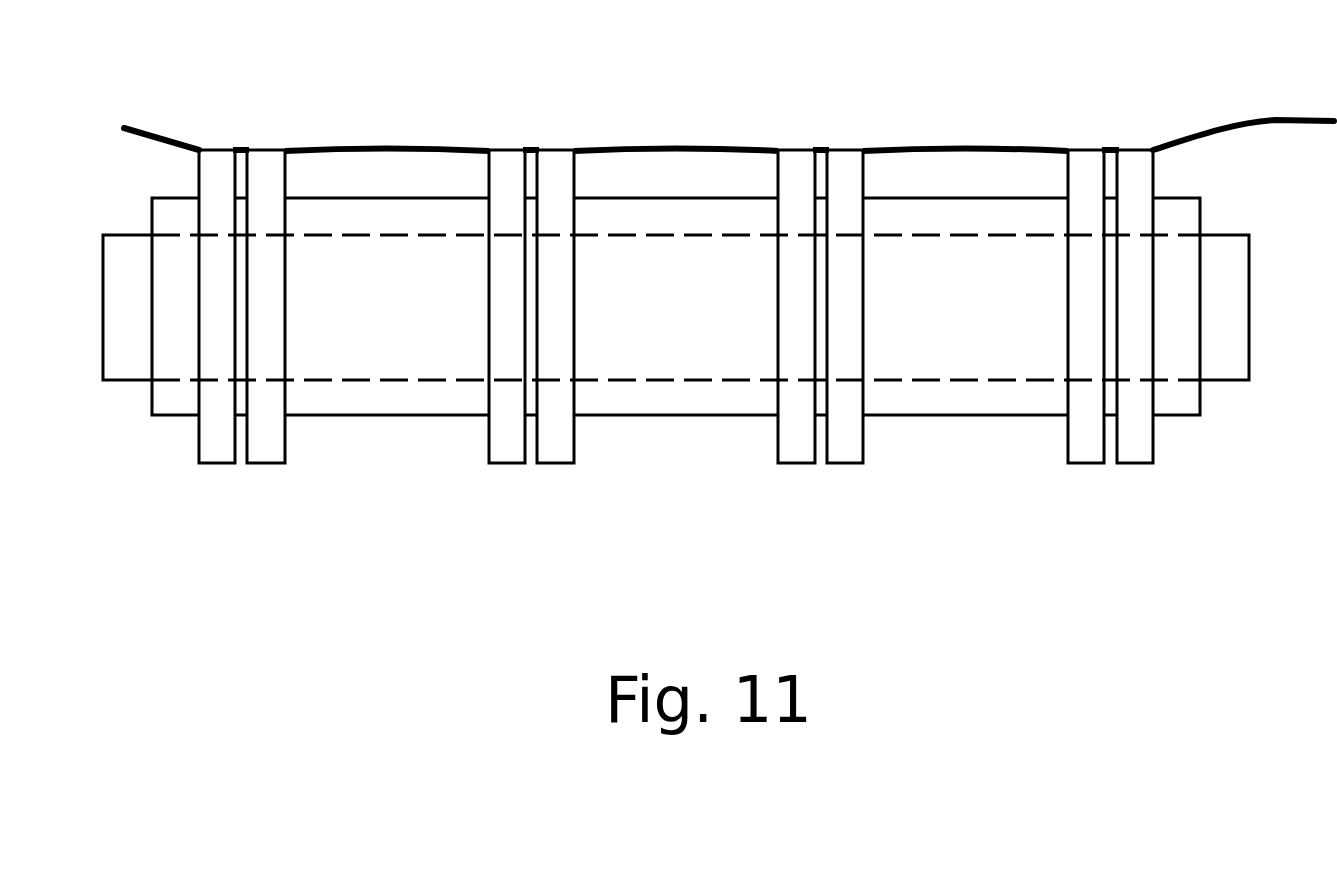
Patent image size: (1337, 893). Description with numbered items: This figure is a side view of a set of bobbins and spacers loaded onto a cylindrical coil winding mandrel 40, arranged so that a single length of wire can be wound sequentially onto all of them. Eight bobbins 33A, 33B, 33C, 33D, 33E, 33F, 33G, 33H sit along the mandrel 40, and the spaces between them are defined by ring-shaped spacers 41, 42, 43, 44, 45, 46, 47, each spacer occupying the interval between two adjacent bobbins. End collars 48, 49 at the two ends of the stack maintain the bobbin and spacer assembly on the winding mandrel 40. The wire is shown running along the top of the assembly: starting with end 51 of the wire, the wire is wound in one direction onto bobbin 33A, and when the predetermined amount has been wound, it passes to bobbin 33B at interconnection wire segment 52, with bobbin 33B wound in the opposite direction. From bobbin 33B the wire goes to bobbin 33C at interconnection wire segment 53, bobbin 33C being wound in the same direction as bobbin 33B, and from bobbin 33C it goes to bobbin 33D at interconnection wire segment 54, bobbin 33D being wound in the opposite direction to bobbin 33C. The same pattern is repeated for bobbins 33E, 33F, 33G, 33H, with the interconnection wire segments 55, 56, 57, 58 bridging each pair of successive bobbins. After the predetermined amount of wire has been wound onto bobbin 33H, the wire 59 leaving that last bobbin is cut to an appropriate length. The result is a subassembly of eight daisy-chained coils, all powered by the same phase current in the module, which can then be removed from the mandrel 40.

The winding mandrel 40 is at (1230, 383).
The bobbin 33A is at (215, 465).
The bobbin 33B is at (265, 465).
The bobbin 33C is at (504, 465).
The bobbin 33D is at (555, 465).
The bobbin 33E is at (793, 465).
The bobbin 33F is at (845, 465).
The bobbin 33G is at (1083, 465).
The bobbin 33H is at (1133, 465).
The spacer 41 is at (241, 416).
The spacer 42 is at (380, 418).
The spacer 43 is at (531, 416).
The spacer 44 is at (688, 418).
The spacer 45 is at (820, 416).
The spacer 46 is at (978, 418).
The spacer 47 is at (1110, 416).
The end collar 48 is at (172, 418).
The end collar 49 is at (1175, 418).
The end of the wire 51 is at (135, 126).
The interconnection wire segment 52 is at (239, 150).
The interconnection wire segment 53 is at (376, 148).
The interconnection wire segment 54 is at (528, 150).
The interconnection wire segment 55 is at (672, 148).
The interconnection wire segment 56 is at (817, 150).
The interconnection wire segment 57 is at (962, 148).
The interconnection wire segment 58 is at (1107, 150).
The wire end 59 is at (1226, 122).